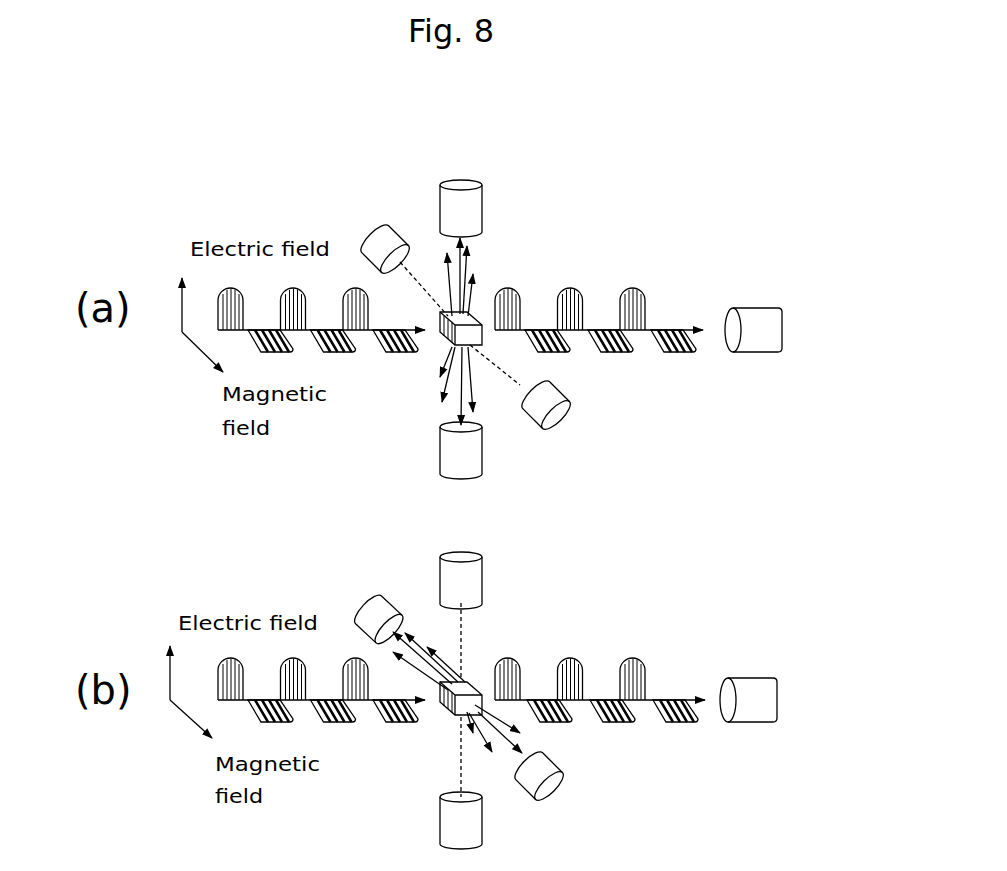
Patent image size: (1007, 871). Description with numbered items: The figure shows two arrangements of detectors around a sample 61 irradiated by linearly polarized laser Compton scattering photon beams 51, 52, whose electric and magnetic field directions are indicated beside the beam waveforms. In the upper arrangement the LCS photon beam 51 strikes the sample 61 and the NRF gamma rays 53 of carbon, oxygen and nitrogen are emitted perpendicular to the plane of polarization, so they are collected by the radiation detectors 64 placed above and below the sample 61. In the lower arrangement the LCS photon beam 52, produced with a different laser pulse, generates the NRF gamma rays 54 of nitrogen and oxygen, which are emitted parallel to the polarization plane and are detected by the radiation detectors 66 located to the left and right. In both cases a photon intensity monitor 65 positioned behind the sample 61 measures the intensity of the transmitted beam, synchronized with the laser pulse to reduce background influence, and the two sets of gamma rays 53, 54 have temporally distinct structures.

The LCS photon beam 51 is at (460, 337).
The LCS photon beam 52 is at (461, 709).
The NRF gamma rays 53 is at (473, 268).
The NRF gamma rays 54 is at (420, 638).
The sample 61 is at (438, 320).
The radiation detectors 64 is at (478, 204).
The photon intensity monitor 65 is at (754, 314).
The radiation detectors 66 is at (386, 234).